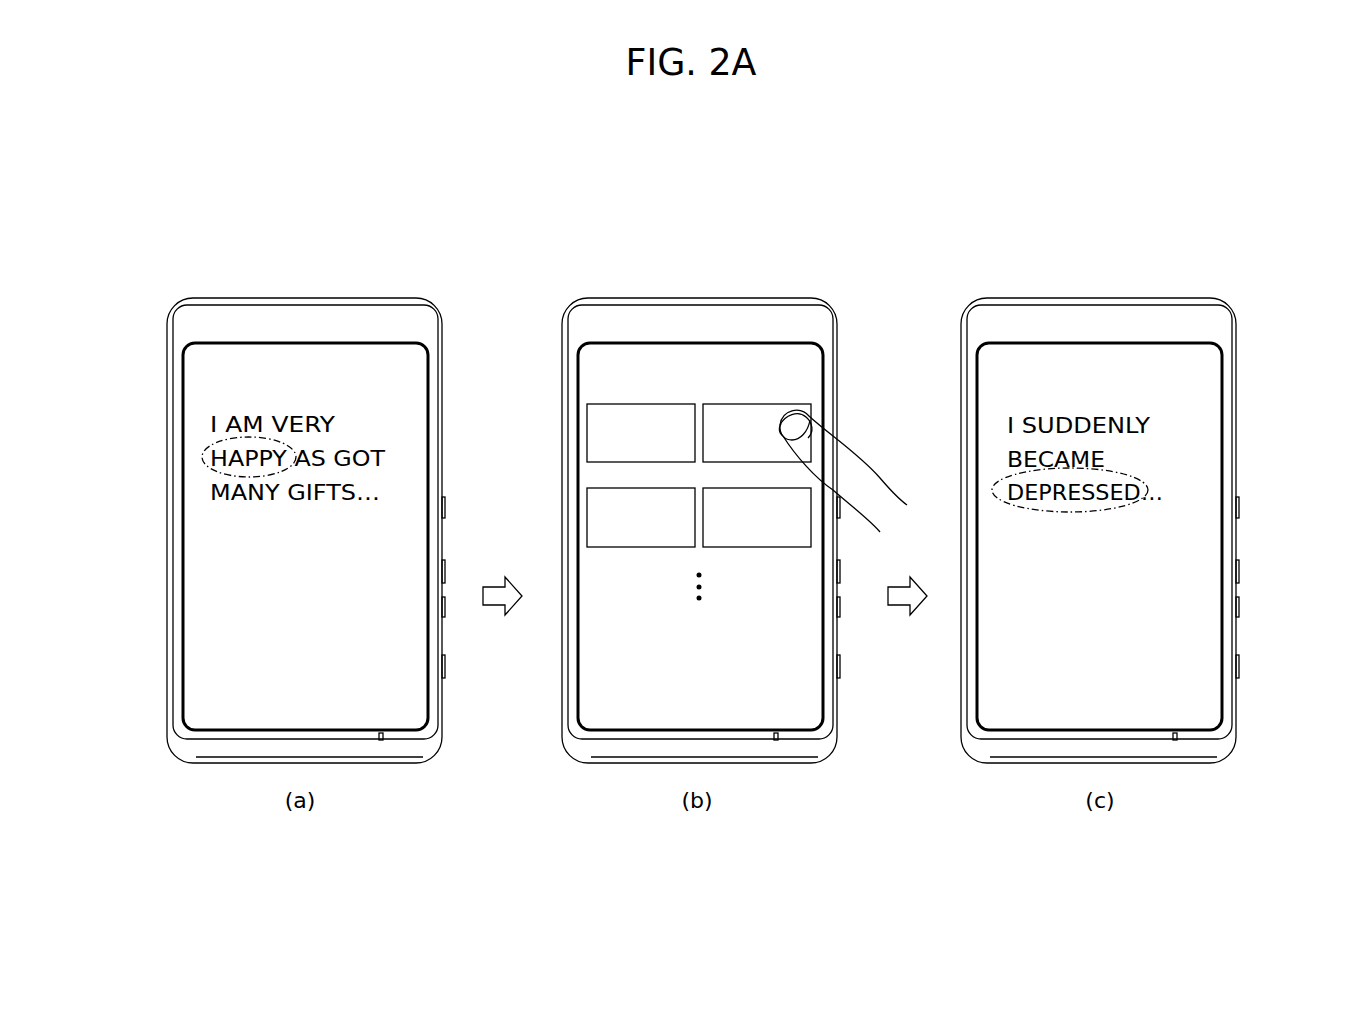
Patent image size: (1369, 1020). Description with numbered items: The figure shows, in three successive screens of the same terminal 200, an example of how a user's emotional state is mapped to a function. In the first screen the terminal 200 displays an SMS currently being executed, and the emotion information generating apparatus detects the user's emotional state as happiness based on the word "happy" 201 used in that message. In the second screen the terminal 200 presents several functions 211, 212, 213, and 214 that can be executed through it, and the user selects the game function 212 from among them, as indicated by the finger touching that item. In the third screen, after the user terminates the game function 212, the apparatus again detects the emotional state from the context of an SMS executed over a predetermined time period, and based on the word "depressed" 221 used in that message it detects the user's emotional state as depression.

The terminal 200 is at (295, 298).
The word "happy" 201 is at (204, 456).
The function 211 is at (587, 430).
The game function 212 is at (787, 403).
The function 213 is at (587, 514).
The function 214 is at (780, 548).
The word "depressed" 221 is at (1146, 481).